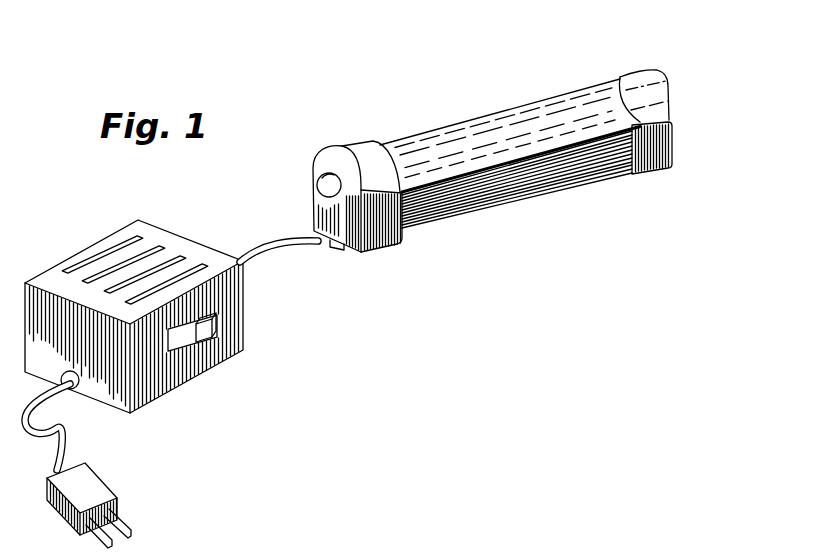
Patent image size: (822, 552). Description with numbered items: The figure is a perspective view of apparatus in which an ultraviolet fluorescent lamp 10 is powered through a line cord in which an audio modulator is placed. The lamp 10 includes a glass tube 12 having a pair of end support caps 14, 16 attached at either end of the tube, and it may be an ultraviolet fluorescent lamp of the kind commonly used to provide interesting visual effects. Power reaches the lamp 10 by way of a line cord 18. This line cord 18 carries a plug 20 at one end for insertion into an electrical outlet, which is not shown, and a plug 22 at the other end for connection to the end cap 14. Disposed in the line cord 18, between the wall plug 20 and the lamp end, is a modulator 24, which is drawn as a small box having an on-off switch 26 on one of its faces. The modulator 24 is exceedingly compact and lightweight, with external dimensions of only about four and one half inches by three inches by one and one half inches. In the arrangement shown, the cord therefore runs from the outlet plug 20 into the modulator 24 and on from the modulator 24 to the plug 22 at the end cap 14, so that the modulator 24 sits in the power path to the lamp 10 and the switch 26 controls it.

The fluorescent lamp 10 is at (492, 155).
The glass tube 12 is at (538, 100).
The end support cap 14 is at (343, 143).
The end support cap 16 is at (627, 72).
The line cord 18 is at (73, 442).
The plug 20 is at (97, 482).
The plug 22 is at (340, 246).
The modulator 24 is at (169, 316).
The on-off switch 26 is at (207, 343).